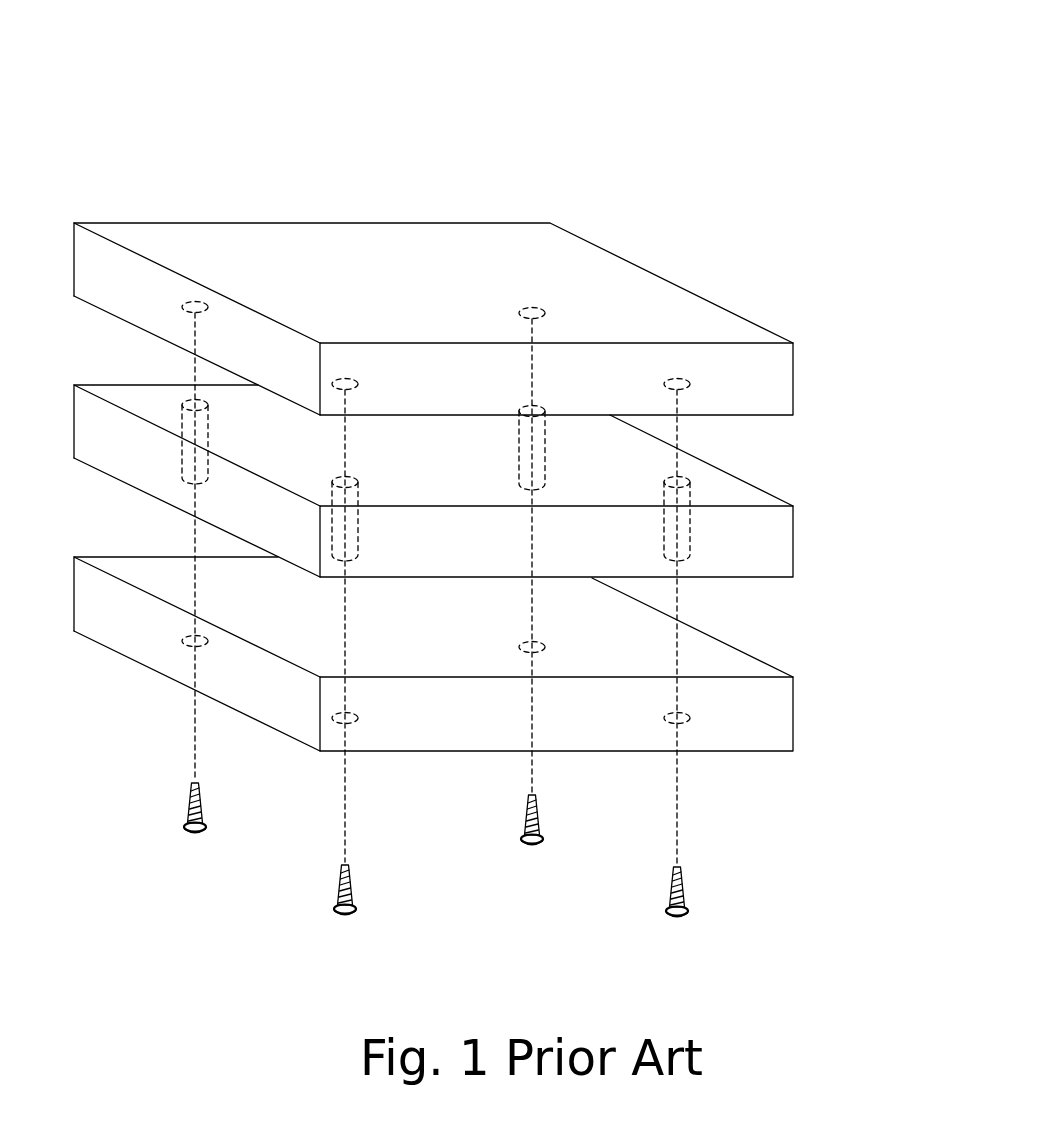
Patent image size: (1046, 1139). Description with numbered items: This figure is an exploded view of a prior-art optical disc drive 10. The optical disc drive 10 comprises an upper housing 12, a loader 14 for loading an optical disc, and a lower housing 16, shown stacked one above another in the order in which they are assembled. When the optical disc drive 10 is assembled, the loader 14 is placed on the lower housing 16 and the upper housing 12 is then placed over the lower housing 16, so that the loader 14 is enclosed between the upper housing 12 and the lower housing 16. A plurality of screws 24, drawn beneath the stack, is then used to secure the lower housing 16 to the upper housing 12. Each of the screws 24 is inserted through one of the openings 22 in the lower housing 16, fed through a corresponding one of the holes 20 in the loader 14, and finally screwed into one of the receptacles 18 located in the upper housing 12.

The optical disc drive 10 is at (790, 218).
The upper housing 12 is at (710, 310).
The loader 14 is at (773, 553).
The lower housing 16 is at (782, 727).
The receptacles 18 is at (357, 383).
The holes 20 is at (358, 481).
The openings 22 is at (358, 716).
The screws 24 is at (355, 912).